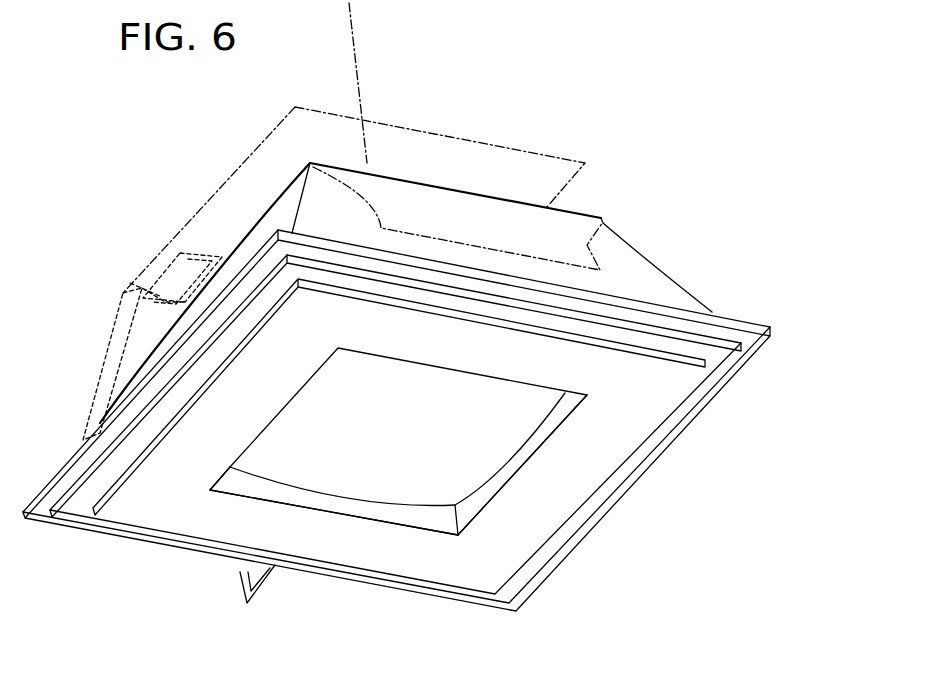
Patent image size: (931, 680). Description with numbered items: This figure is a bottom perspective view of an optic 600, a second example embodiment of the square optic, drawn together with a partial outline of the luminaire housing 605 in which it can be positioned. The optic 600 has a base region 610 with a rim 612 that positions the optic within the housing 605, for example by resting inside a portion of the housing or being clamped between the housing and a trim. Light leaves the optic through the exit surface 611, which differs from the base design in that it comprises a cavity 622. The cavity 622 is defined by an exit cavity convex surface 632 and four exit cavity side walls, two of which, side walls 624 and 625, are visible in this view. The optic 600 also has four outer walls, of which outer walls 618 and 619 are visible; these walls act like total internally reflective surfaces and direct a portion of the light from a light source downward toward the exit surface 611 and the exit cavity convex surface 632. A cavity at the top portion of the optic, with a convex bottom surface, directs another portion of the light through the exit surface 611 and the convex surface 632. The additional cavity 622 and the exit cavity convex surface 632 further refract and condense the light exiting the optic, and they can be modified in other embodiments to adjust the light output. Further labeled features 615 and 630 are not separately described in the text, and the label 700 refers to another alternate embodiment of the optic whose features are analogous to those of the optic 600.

The optic 600 is at (650, 74).
The luminaire housing 605 is at (136, 280).
The base region 610 is at (790, 330).
The exit surface 611 is at (586, 476).
The rim 612 is at (742, 321).
The optical cover assembly 615 is at (464, 264).
The outer wall 618 is at (295, 197).
The outer wall 619 is at (620, 230).
The cavity 622 is at (388, 495).
The exit cavity side wall 624 is at (472, 510).
The exit cavity side wall 625 is at (242, 482).
The optical axis 630 is at (360, 50).
The exit cavity convex surface 632 is at (428, 457).
The optic 700 is at (592, 677).